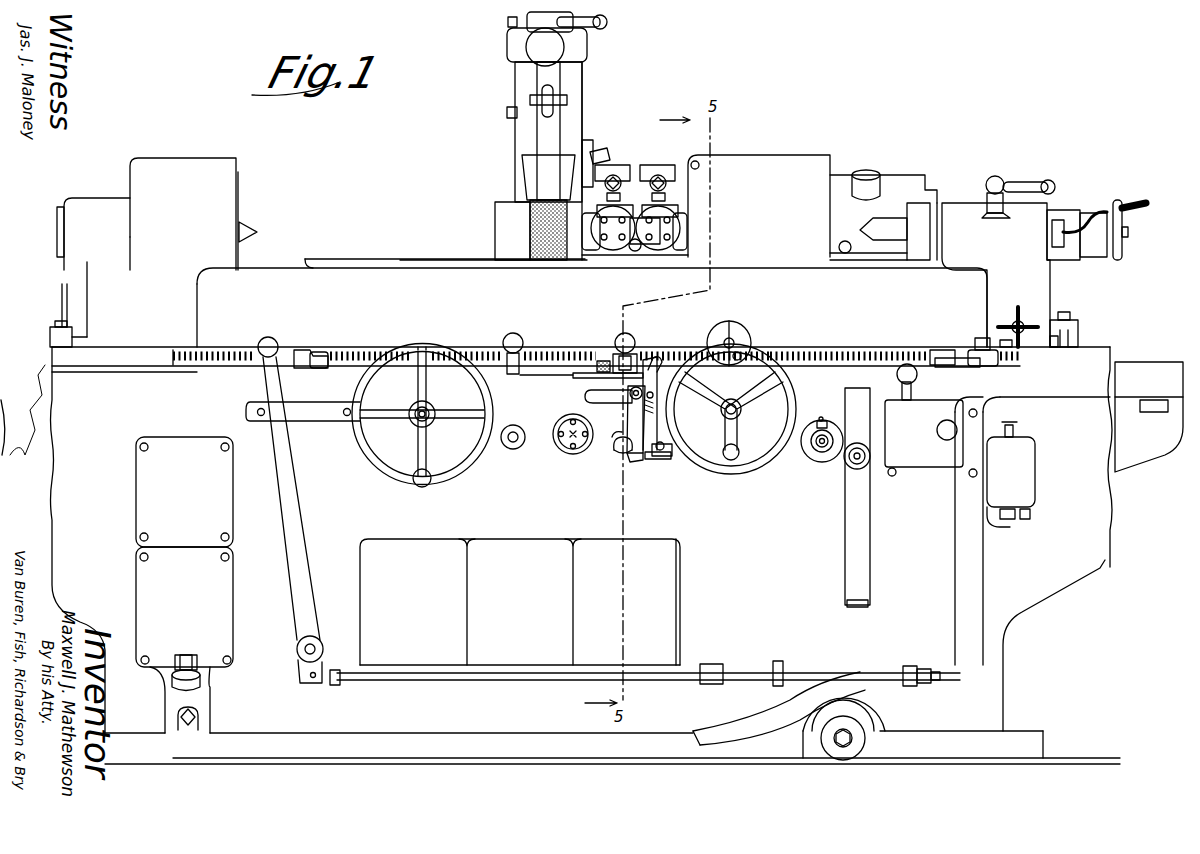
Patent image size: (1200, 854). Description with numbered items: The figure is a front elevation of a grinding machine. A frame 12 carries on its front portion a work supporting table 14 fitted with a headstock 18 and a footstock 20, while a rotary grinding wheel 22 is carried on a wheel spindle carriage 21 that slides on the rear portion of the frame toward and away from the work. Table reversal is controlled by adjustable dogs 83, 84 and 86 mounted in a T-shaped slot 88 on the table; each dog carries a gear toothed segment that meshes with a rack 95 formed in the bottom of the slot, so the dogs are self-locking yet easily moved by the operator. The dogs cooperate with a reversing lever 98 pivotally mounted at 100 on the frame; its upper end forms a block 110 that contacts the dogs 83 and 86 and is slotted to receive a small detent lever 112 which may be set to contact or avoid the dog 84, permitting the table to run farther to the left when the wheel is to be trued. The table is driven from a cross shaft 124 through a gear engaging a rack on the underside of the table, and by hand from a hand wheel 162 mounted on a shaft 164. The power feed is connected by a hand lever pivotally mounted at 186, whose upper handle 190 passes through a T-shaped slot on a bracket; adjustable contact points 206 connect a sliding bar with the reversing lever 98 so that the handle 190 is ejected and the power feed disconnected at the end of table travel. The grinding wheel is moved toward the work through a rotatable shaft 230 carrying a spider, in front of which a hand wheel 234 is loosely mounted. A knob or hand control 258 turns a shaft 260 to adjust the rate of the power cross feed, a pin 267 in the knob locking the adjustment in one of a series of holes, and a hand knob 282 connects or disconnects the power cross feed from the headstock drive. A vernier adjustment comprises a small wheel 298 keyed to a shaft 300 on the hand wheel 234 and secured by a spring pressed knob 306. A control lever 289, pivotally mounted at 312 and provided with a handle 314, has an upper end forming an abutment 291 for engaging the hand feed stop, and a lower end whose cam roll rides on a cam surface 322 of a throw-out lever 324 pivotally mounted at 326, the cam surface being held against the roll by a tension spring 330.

The frame 12 is at (592, 511).
The work supporting table 14 is at (183, 349).
The headstock 18 is at (157, 214).
The footstock 20 is at (917, 251).
The wheel spindle carriage 21 is at (636, 176).
The rotary grinding wheel 22 is at (530, 215).
The dog 83 is at (315, 352).
The dog 84 is at (940, 350).
The dog 86 is at (978, 352).
The T-shaped slot 88 is at (340, 352).
The rack 95 is at (812, 350).
The reversing lever 98 is at (625, 377).
The pivot 100 is at (615, 450).
The block 110 is at (617, 343).
The detent lever 112 is at (636, 348).
The cross shaft 124 is at (562, 450).
The hand wheel 162 is at (420, 348).
The shaft 164 is at (408, 411).
The pivot 186 is at (512, 449).
The handle 190 is at (513, 341).
The adjustable contact points 206 is at (600, 361).
The rotatable shaft 230 is at (737, 402).
The hand wheel 234 is at (705, 350).
The knob or hand control 258 is at (808, 448).
The shaft 260 is at (822, 449).
The pin 267 is at (823, 416).
The hand knob 282 is at (865, 463).
The control lever 289 is at (648, 386).
The abutment 291 is at (658, 360).
The vernier wheel 298 is at (738, 345).
The shaft 300 is at (740, 352).
The spring pressed knob 306 is at (727, 330).
The pivot 312 is at (625, 419).
The handle 314 is at (590, 397).
The cam surface 322 is at (636, 446).
The throw-out lever 324 is at (622, 452).
The pivot 326 is at (665, 458).
The tension spring 330 is at (645, 409).